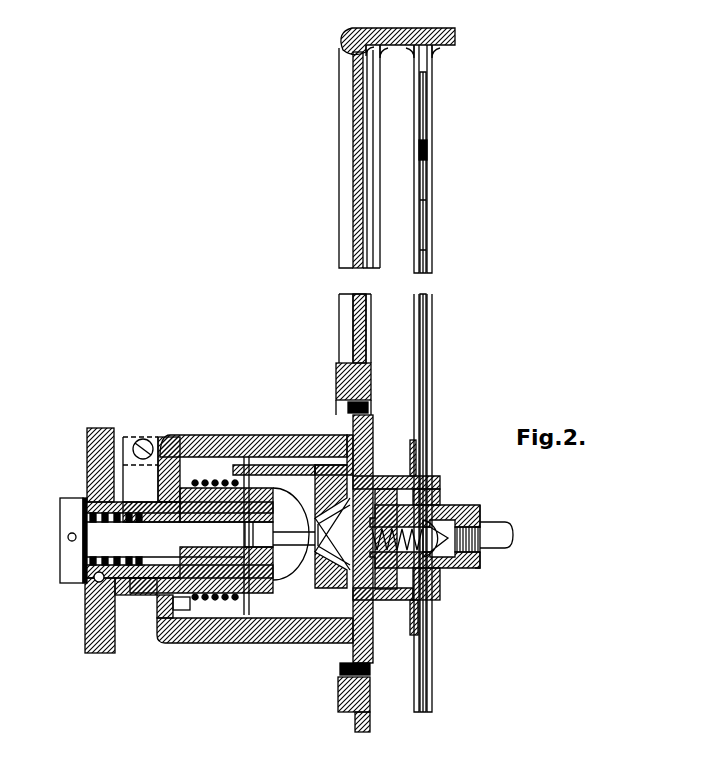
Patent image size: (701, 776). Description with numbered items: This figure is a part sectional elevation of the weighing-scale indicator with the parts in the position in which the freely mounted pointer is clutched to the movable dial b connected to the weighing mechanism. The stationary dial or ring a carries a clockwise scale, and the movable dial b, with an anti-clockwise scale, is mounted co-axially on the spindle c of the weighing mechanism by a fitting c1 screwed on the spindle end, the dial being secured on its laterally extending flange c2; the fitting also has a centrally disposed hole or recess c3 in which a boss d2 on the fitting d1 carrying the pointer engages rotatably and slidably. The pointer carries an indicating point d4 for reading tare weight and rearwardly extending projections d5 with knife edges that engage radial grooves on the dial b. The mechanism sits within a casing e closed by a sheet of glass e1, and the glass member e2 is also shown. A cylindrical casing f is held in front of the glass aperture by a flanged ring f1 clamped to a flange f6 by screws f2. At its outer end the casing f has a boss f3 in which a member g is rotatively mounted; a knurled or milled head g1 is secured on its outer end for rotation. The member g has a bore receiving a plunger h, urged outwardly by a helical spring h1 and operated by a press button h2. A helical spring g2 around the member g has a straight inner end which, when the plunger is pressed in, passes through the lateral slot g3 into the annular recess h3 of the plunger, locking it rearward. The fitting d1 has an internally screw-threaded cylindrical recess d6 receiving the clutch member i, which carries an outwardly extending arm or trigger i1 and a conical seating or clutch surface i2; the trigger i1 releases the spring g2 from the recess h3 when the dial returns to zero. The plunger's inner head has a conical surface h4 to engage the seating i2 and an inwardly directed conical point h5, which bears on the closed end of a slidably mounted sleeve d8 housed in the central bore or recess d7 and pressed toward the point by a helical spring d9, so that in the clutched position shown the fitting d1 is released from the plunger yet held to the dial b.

The stationary dial or ring a is at (419, 90).
The movable dial b is at (432, 188).
The spindle c is at (495, 533).
The fitting c1 is at (445, 535).
The laterally extending flange c2 is at (436, 492).
The centrally disposed hole or recess c3 is at (470, 527).
The fitting d1 is at (421, 455).
The boss d2 is at (428, 476).
The indicating point d4 is at (423, 224).
The rearwardly extending projection d5 is at (427, 148).
The internally screw-threaded cylindrical recess d6 is at (370, 478).
The central bore or recess d7 is at (438, 578).
The slidably mounted sleeve d8 is at (420, 615).
The helical spring d9 is at (476, 566).
The casing e is at (423, 45).
The sheet of glass e1 is at (355, 160).
The cap e2 is at (385, 36).
The cylindrical casing f is at (190, 445).
The flanged ring f1 is at (352, 380).
The screws f2 is at (346, 405).
The boss f3 is at (144, 439).
The flange f6 is at (345, 695).
The member g is at (215, 593).
The knurled or milled head g1 is at (100, 618).
The helical spring g2 is at (250, 478).
The lateral slot g3 is at (100, 478).
The plunger h is at (165, 600).
The helical spring h1 is at (88, 553).
The press button h2 is at (70, 519).
The annular recess h3 is at (255, 585).
The conical surface h4 is at (292, 568).
The inwardly directed conical point h5 is at (382, 602).
The clutch member i is at (290, 478).
The outwardly extending arm or trigger i1 is at (272, 465).
The conical seating or clutch surface i2 is at (333, 582).